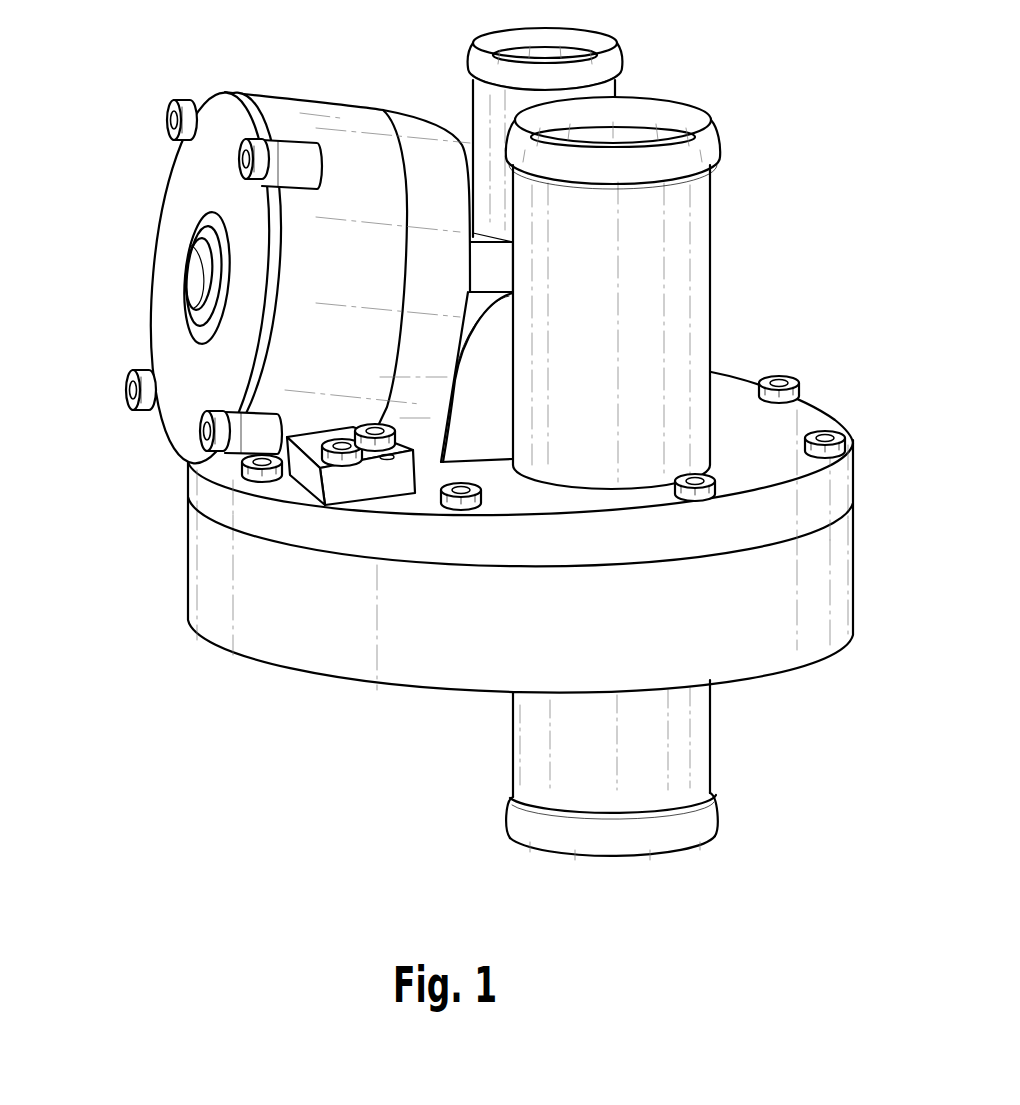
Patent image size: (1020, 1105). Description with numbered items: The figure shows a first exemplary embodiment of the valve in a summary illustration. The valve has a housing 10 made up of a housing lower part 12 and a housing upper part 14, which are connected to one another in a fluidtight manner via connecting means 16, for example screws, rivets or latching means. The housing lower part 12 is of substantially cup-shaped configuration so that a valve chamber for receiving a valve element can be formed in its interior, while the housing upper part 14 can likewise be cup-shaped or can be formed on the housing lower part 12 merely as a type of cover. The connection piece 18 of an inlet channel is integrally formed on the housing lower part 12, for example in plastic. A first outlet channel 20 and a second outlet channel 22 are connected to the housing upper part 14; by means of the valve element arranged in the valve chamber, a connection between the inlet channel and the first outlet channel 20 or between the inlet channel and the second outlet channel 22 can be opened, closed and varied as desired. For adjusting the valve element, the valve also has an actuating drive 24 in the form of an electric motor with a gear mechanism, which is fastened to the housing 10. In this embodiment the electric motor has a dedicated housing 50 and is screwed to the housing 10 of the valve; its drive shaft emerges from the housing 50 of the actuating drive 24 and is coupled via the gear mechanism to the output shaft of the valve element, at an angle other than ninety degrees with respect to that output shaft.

The housing 10 is at (473, 443).
The housing lower part 12 is at (820, 580).
The housing upper part 14 is at (820, 490).
The connecting means 16 is at (780, 374).
The connection piece 18 is at (680, 750).
The first outlet channel 20 is at (672, 227).
The second outlet channel 22 is at (483, 102).
The actuating drive 24 is at (272, 247).
The housing 50 is at (347, 150).